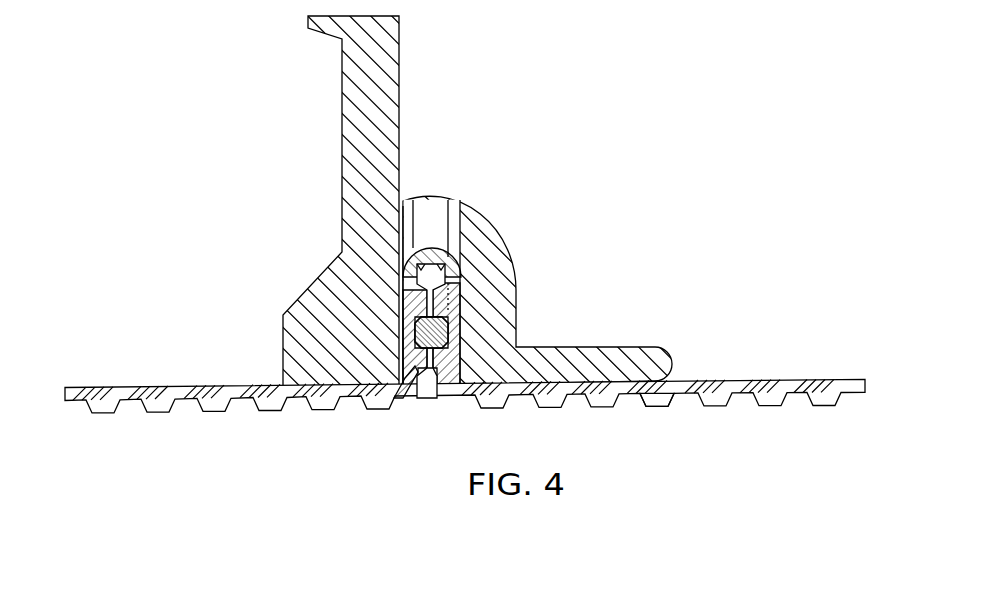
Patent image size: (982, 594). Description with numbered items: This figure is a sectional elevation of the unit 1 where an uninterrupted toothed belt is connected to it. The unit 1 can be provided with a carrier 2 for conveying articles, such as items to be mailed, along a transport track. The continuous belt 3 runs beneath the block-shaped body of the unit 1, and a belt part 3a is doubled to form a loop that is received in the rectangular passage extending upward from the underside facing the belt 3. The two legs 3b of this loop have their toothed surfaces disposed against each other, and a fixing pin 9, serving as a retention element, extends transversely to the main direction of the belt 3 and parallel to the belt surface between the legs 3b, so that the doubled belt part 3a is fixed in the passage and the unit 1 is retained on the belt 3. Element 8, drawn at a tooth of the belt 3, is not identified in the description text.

The unit 1 is at (692, 140).
The carrier 2 is at (372, 100).
The continuous belt part 3 is at (772, 380).
The belt part 3a is at (437, 262).
The legs of the loop 3b is at (405, 303).
The rib of base sheet 8 is at (662, 407).
The fixing pin 9 is at (450, 329).